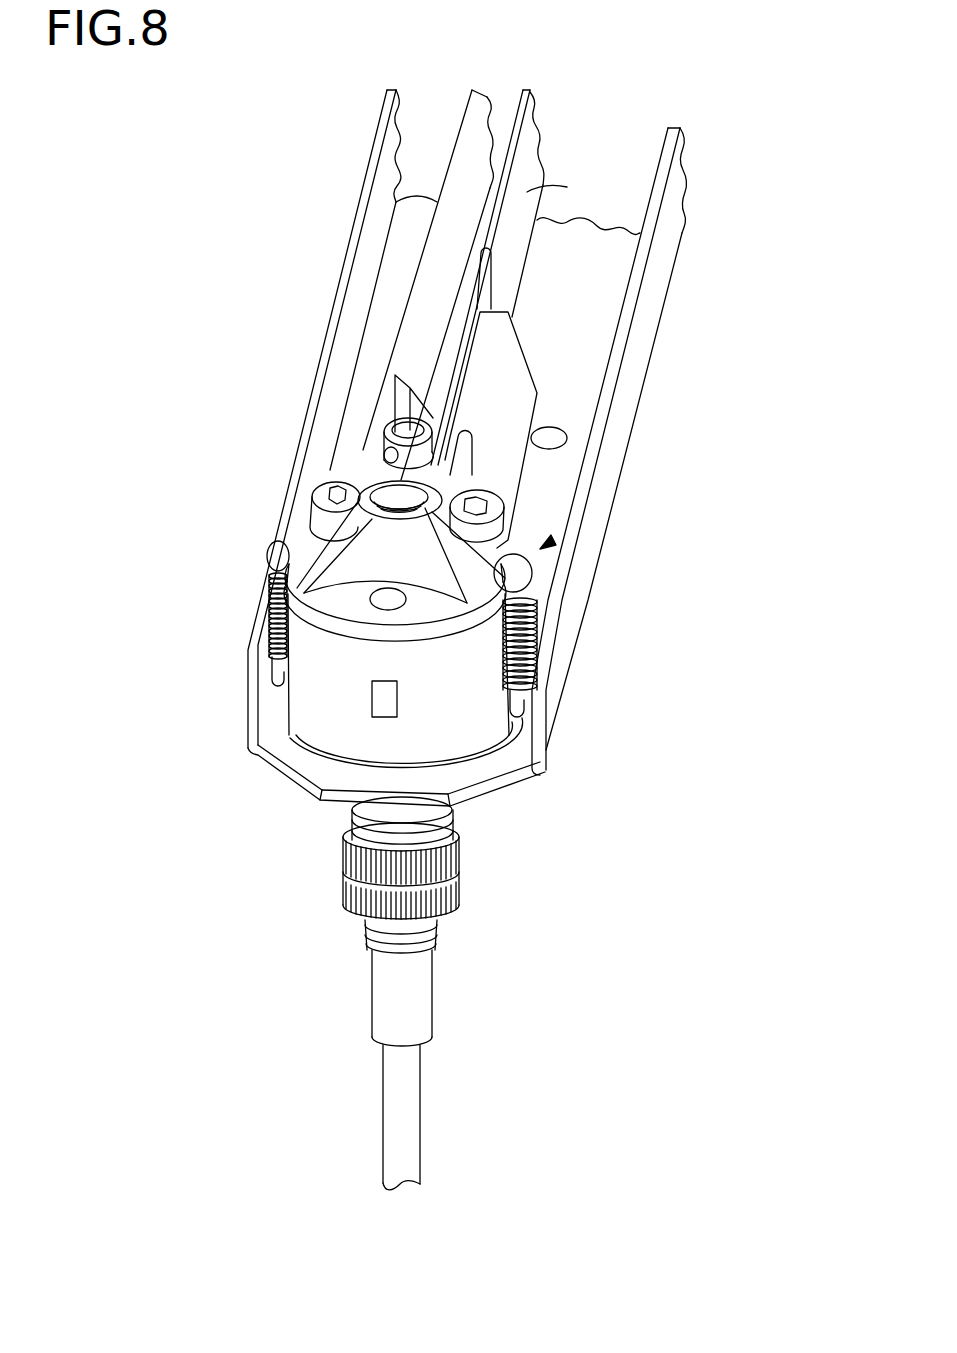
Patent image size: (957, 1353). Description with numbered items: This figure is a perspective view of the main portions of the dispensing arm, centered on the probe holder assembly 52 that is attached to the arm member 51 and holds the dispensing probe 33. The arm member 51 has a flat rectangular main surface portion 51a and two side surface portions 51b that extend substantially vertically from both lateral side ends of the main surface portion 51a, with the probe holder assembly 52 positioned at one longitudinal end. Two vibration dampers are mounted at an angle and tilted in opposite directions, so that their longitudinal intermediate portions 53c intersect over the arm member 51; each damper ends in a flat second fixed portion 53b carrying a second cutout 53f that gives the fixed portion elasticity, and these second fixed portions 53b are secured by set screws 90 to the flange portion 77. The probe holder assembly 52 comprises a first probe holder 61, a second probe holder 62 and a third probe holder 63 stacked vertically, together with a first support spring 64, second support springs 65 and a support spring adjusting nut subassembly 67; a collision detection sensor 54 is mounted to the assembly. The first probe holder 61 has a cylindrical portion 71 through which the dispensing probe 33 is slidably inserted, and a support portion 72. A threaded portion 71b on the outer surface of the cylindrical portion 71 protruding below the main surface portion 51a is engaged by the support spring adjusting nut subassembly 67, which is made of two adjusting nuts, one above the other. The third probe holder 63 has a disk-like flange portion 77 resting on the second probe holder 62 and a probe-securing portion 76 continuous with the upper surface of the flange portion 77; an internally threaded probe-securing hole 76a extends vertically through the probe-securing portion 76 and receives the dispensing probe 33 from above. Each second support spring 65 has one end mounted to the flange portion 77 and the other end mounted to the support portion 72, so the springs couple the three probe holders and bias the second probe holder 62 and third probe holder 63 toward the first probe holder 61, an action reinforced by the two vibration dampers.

The arm member 51 is at (415, 237).
The main surface portion 51a is at (608, 262).
The side surface portions 51b is at (353, 245).
The intermediate portion 53c is at (418, 293).
The second fixed portion 53b is at (372, 420).
The second cutout 53f is at (385, 440).
The collision detection sensor 54 is at (467, 473).
The set screws 90 is at (330, 473).
The probe holder assembly 52 is at (552, 540).
The probe-securing hole 76a is at (432, 490).
The probe-securing portion 76 is at (380, 535).
The flange portion 77 is at (330, 588).
The third probe holder 63 is at (483, 580).
The second support springs 65 is at (275, 636).
The second probe holder 62 is at (473, 653).
The first probe holder 61 is at (440, 782).
The support portion 72 is at (473, 747).
The first support spring 64 is at (453, 817).
The support spring adjusting nut subassembly 67 is at (462, 885).
The threaded portion 71b is at (440, 933).
The cylindrical portion 71 is at (436, 1015).
The dispensing probe 33 is at (422, 1138).